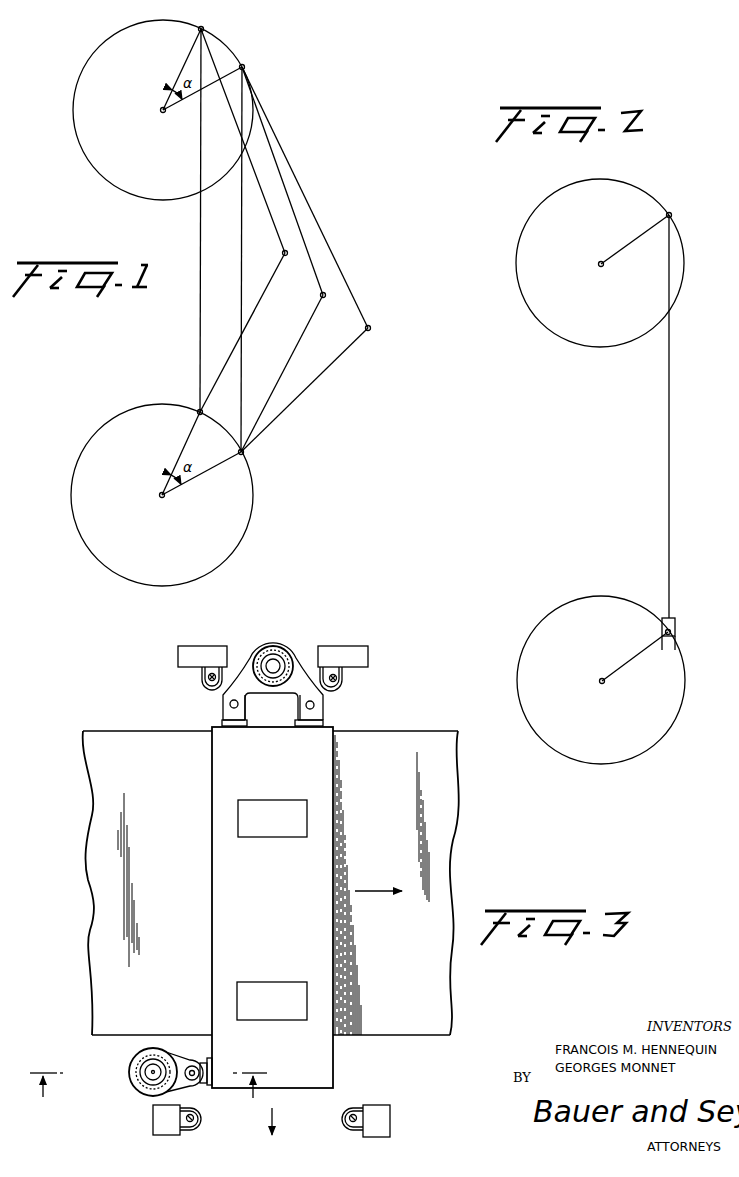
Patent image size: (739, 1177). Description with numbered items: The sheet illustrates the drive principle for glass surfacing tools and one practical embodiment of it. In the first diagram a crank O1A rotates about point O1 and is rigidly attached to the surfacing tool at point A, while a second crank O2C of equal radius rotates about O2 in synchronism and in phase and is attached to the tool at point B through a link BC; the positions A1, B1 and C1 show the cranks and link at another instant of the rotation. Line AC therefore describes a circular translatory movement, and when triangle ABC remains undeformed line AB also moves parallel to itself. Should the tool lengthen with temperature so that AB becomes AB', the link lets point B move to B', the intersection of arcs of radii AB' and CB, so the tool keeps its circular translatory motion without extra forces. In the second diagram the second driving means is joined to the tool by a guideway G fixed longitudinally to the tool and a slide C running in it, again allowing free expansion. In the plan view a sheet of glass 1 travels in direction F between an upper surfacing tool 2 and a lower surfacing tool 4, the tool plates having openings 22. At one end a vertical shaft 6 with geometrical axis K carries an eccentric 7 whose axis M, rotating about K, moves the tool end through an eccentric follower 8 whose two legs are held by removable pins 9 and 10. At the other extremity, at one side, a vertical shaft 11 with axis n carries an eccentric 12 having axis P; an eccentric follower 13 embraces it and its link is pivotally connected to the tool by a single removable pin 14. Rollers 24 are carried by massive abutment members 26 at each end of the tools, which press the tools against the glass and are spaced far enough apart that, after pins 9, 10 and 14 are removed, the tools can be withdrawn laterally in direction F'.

In FIG. 3, the sheet of glass 1 is at (82, 769).
In FIG. 3, the upper surfacing tool 2 is at (215, 800).
In FIG. 3, the lower surfacing tool 4 is at (148, 1077).
In FIG. 3, the vertical shaft 6 is at (278, 654).
In FIG. 3, the eccentric 7 is at (285, 672).
In FIG. 3, the eccentric follower 8 is at (307, 687).
In FIG. 3, the removable pin 9 is at (314, 708).
In FIG. 3, the removable pin 10 is at (253, 716).
In FIG. 3, the vertical shaft 11 is at (148, 1066).
In FIG. 3, the eccentric 12 is at (146, 1078).
In FIG. 3, the eccentric follower 13 is at (148, 1097).
In FIG. 3, the removable pin 14 is at (196, 1079).
In FIG. 3, the window opening 22 is at (277, 802).
In FIG. 3, the roller 24 is at (208, 675).
In FIG. 3, the abutment members 26 is at (178, 653).
In FIG. 3, the geometrical axis of shaft K is at (265, 653).
In FIG. 3, the geometrical axis of eccentric M is at (272, 673).
In FIG. 3, the geometrical axis of eccentric P is at (151, 1063).
In FIG. 3, the geometrical axis of shaft n is at (146, 1082).
In FIG. 3, the direction of glass travel F is at (378, 880).
In FIG. 3, the direction of tool removal F' is at (281, 1119).
In FIG. 1, the attachment point of first crank A is at (304, 253).
In FIG. 2, the attachment point of first crank A is at (642, 408).
In FIG. 1, the crank pin position A1 is at (242, 212).
In FIG. 1, the second attachment point B is at (283, 370).
In FIG. 1, the link joint position B1 is at (244, 326).
In FIG. 1, the displaced position of point B B' is at (314, 389).
In FIG. 1, the crank end point / slide C is at (249, 457).
In FIG. 2, the crank end point / slide C is at (675, 636).
In FIG. 1, the crank pin position C1 is at (190, 402).
In FIG. 1, the center of rotation of first crank O1 is at (163, 110).
In FIG. 2, the center of rotation of first crank O1 is at (600, 263).
In FIG. 1, the center of rotation of second crank O2 is at (162, 495).
In FIG. 2, the center of rotation of second crank O2 is at (601, 680).
In FIG. 2, the guideway G is at (675, 629).